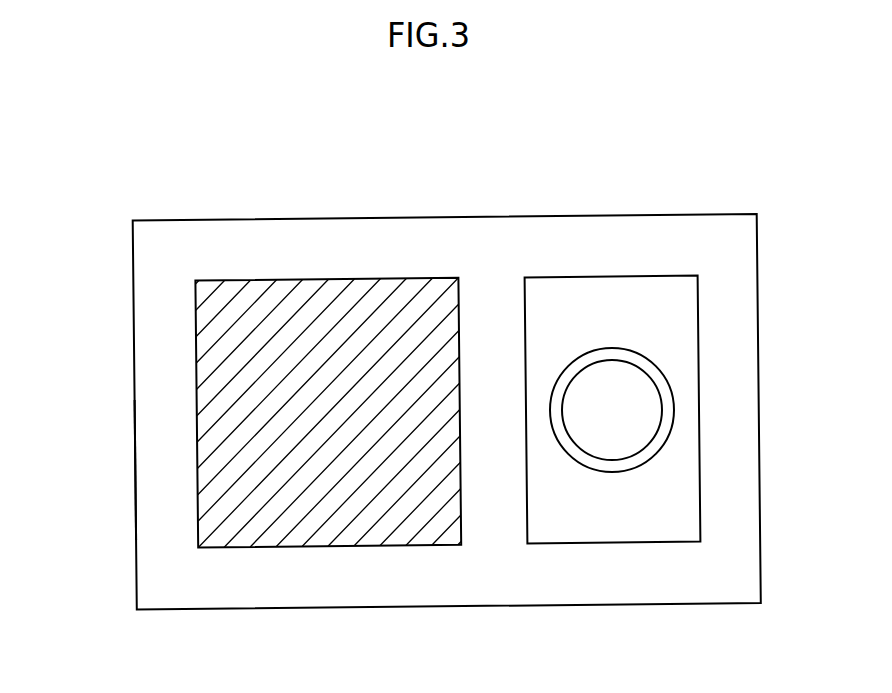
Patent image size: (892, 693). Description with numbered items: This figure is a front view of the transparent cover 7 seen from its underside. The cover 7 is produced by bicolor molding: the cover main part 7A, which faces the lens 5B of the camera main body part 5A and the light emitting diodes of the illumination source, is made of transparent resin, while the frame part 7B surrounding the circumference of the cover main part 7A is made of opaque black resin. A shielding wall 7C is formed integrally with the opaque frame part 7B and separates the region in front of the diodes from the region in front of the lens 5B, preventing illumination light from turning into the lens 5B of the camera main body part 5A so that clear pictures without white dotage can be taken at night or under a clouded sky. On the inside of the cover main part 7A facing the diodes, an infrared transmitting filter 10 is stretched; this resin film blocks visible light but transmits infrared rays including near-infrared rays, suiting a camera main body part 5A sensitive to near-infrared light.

The transparent cover 7 is at (317, 217).
The infrared transmitting filter 10 is at (393, 307).
The cover main part 7A is at (597, 513).
The frame part 7B is at (162, 470).
The shielding wall 7C is at (500, 492).
The camera main body part 5A is at (642, 352).
The lens 5B is at (603, 387).